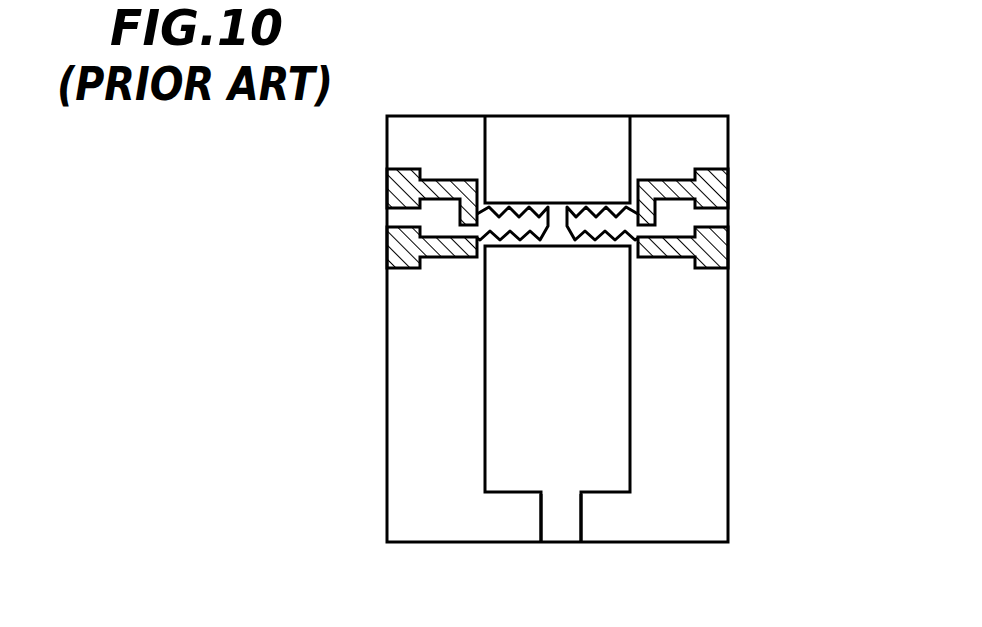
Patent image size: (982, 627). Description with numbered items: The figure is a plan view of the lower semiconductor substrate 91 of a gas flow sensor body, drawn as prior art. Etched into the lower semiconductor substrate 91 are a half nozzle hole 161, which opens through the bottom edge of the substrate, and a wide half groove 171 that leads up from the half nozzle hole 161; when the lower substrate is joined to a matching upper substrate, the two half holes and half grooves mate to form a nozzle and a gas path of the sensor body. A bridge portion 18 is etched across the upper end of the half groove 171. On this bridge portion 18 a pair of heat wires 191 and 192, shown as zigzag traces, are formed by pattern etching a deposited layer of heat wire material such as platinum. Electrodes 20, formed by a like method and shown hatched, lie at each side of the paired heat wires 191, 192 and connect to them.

The bridge portion 18 is at (586, 203).
The electrodes 20 is at (398, 187).
The lower semiconductor substrate 91 is at (707, 340).
The half groove 171 is at (497, 375).
The heat wire 191 is at (512, 240).
The heat wire 192 is at (608, 240).
The half nozzle hole 161 is at (565, 527).